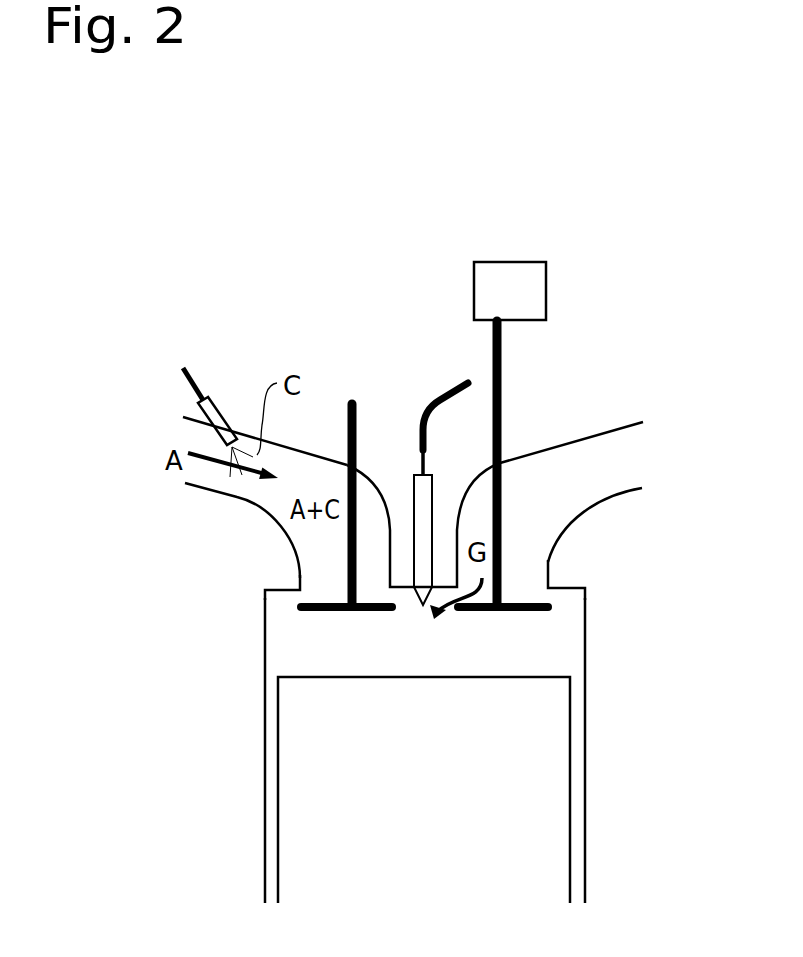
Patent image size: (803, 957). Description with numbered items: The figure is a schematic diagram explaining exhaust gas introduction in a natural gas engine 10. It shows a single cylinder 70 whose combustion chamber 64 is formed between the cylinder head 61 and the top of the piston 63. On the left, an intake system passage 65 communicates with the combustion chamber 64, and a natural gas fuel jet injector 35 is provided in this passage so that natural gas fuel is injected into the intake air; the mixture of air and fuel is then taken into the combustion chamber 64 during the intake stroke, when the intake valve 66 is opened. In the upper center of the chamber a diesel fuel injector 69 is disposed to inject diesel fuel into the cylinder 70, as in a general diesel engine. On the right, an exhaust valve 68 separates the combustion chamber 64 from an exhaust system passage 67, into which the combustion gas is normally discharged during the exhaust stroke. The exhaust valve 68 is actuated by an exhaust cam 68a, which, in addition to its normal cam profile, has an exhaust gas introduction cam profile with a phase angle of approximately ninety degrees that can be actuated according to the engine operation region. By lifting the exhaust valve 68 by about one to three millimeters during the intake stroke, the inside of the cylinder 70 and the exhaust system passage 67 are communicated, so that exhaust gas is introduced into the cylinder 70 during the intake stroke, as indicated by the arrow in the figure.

The natural gas engine 10 is at (561, 388).
The natural gas fuel jet injector 35 is at (230, 418).
The cylinder head 61 is at (262, 620).
The piston 63 is at (275, 765).
The combustion chamber 64 is at (520, 652).
The intake system passage 65 is at (228, 490).
The intake valve 66 is at (317, 610).
The exhaust system passage 67 is at (640, 490).
The exhaust valve 68 is at (530, 612).
The exhaust cam 68a is at (514, 262).
The diesel fuel injector 69 is at (413, 497).
The cylinder 70 is at (262, 830).